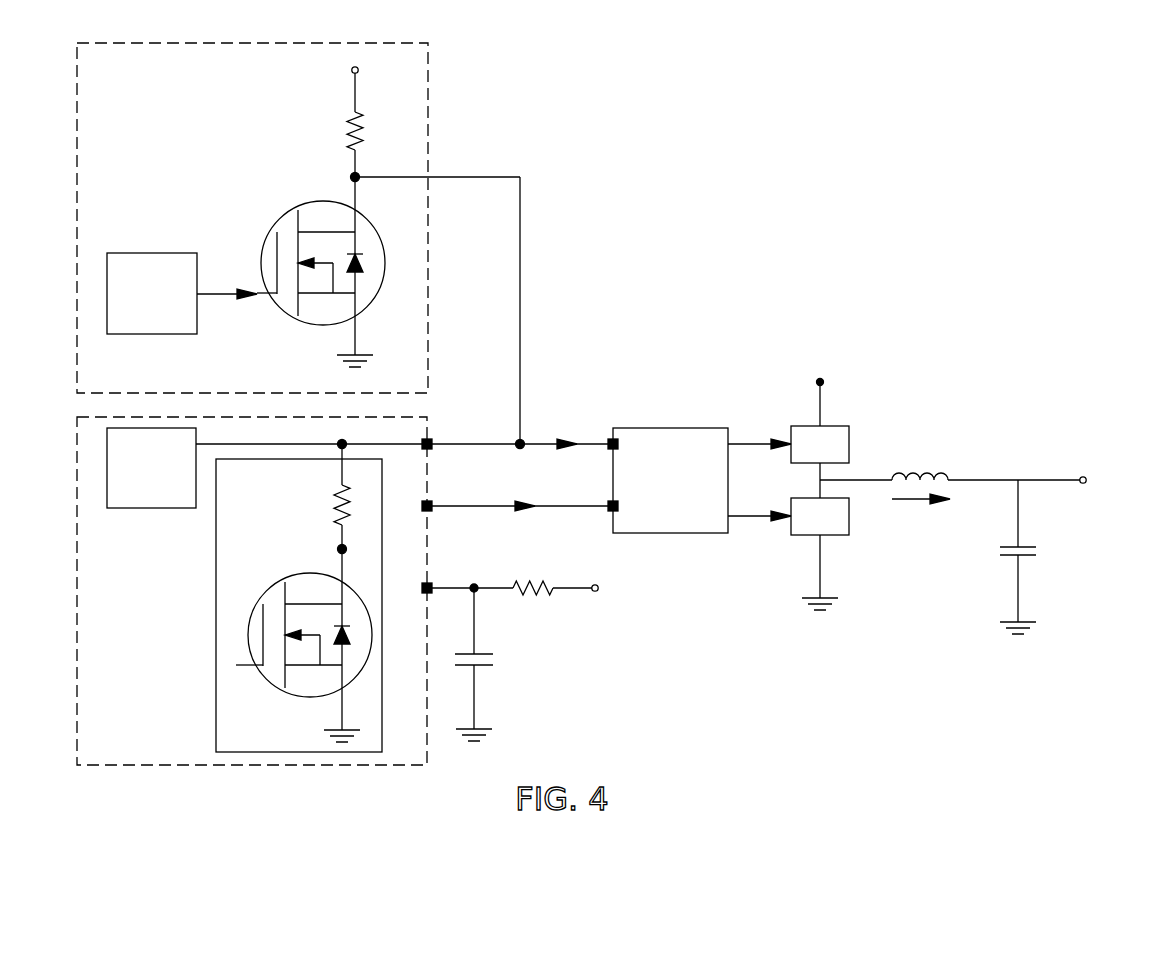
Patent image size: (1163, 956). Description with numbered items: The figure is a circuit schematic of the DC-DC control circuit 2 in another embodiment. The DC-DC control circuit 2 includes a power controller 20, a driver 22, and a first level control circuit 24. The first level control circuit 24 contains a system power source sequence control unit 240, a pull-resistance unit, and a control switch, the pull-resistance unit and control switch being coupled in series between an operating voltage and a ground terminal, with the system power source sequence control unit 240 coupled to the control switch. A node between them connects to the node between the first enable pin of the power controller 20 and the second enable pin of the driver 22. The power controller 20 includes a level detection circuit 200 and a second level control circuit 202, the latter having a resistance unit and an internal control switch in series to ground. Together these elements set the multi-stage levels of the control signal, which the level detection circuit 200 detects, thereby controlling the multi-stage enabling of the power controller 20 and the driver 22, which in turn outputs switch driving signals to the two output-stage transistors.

The DC-DC control circuit 2 is at (594, 388).
The first level control circuit 24 is at (298, 218).
The system power source sequence control unit 240 is at (152, 293).
The power controller 20 is at (345, 591).
The level detection circuit 200 is at (151, 468).
The second level control circuit 202 is at (299, 598).
The driver 22 is at (670, 480).